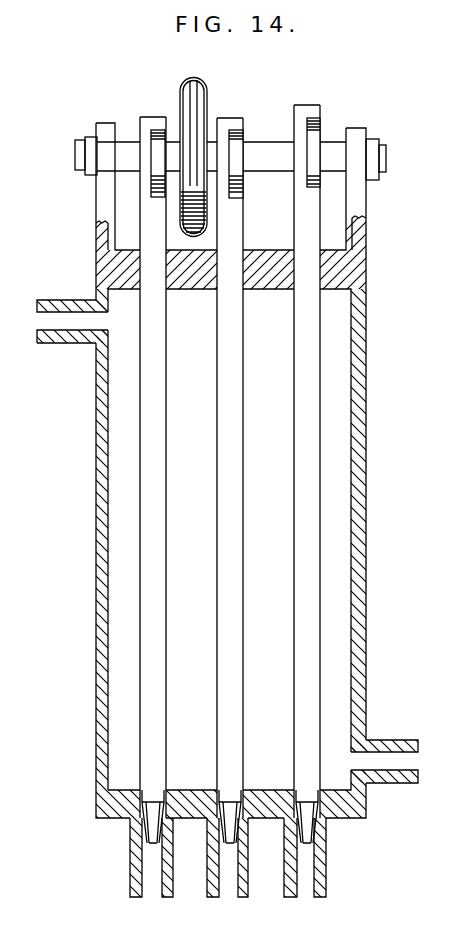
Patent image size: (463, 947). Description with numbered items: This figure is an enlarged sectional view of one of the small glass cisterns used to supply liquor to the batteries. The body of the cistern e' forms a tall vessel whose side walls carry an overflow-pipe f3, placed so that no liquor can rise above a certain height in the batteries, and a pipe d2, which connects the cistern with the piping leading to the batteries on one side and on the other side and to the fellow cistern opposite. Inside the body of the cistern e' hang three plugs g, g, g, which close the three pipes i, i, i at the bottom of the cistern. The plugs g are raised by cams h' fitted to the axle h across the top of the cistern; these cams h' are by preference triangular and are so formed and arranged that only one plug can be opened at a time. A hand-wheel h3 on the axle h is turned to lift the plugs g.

The axle h is at (219, 158).
The cams h' is at (235, 157).
The hand-wheel h3 is at (207, 156).
The overflow-pipe f3 is at (59, 321).
The body of the cistern e' is at (228, 470).
The plugs g is at (230, 474).
The pipe d2 is at (404, 761).
The pipes i is at (228, 872).